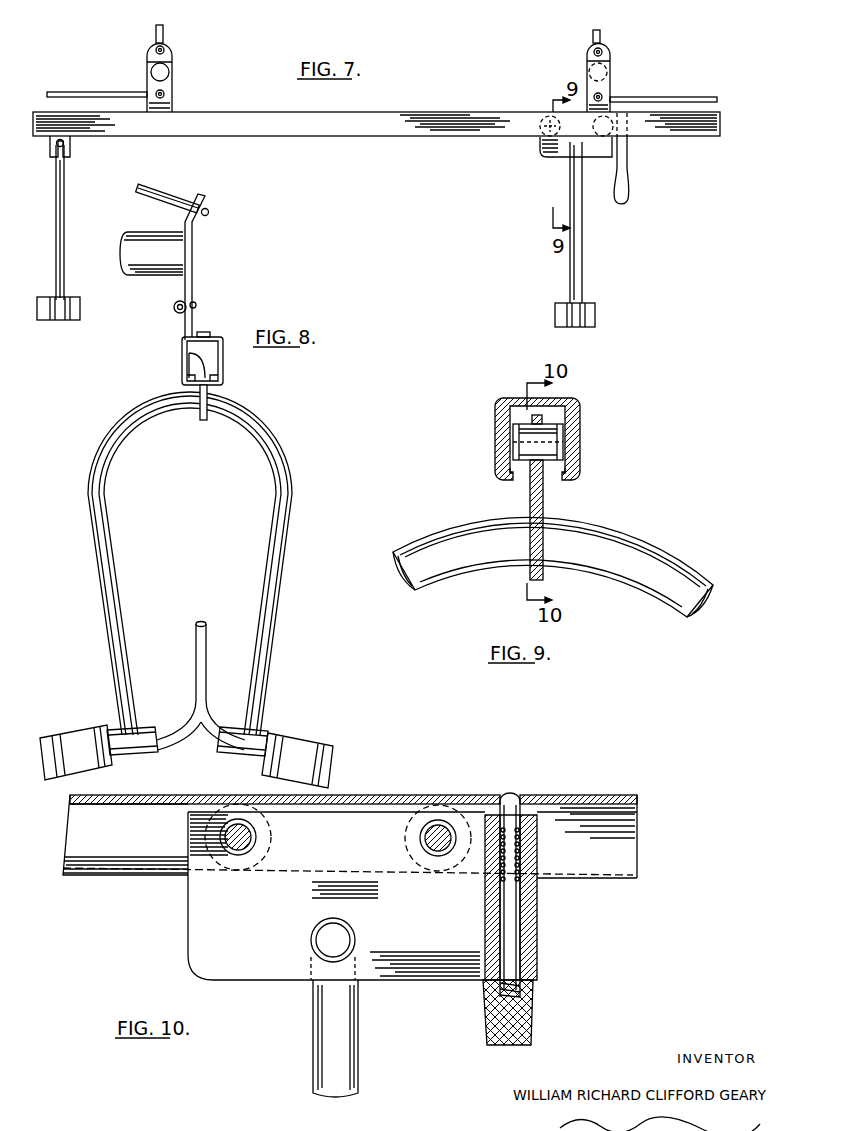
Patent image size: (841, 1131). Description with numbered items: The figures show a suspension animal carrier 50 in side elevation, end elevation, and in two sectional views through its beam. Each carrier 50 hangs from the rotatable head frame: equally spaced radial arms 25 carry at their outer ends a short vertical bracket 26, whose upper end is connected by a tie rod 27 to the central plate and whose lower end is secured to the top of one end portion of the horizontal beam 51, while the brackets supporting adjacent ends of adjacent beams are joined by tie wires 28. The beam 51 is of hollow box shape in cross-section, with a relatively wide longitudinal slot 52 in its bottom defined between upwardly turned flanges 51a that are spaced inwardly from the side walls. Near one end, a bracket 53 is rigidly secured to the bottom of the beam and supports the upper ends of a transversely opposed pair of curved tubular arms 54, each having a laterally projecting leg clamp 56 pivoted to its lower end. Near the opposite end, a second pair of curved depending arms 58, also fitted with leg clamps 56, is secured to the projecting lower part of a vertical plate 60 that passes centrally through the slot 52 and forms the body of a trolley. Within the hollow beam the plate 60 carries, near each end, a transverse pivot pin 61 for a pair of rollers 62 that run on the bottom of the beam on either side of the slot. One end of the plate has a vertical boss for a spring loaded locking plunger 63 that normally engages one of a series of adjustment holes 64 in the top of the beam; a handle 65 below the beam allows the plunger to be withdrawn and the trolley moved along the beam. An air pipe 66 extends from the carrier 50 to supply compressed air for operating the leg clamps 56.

In FIG. 7, the radial arm 25 is at (589, 72).
In FIG. 8, the radial arm 25 is at (164, 270).
In FIG. 7, the vertical bracket 26 is at (173, 87).
In FIG. 8, the vertical bracket 26 is at (193, 282).
In FIG. 7, the tie rod 27 is at (164, 33).
In FIG. 8, the tie rod 27 is at (171, 193).
In FIG. 7, the tie wire 28 is at (95, 92).
In FIG. 8, the tie wire 28 is at (174, 309).
In FIG. 7, the animal carrier 50 is at (468, 65).
In FIG. 7, the horizontal beam 51 is at (368, 128).
In FIG. 8, the horizontal beam 51 is at (224, 362).
In FIG. 9, the horizontal beam 51 is at (578, 405).
In FIG. 10, the horizontal beam 51 is at (567, 800).
In FIG. 9, the upwardly turned flange 51a is at (557, 473).
In FIG. 10, the upwardly turned flange 51a is at (100, 860).
In FIG. 9, the longitudinal slot 52 is at (521, 473).
In FIG. 10, the longitudinal slot 52 is at (160, 878).
In FIG. 7, the bracket 53 is at (72, 141).
In FIG. 8, the bracket 53 is at (183, 358).
In FIG. 7, the curved tubular arm 54 is at (65, 190).
In FIG. 8, the curved tubular arm 54 is at (110, 510).
In FIG. 7, the leg clamp 56 is at (73, 298).
In FIG. 8, the leg clamp 56 is at (75, 738).
In FIG. 7, the curved depending arm 58 is at (582, 250).
In FIG. 9, the curved depending arm 58 is at (637, 540).
In FIG. 10, the curved depending arm 58 is at (358, 1027).
In FIG. 7, the vertical plate 60 is at (543, 158).
In FIG. 9, the vertical plate 60 is at (545, 542).
In FIG. 10, the vertical plate 60 is at (362, 896).
In FIG. 9, the transverse pivot pin 61 is at (560, 441).
In FIG. 10, the transverse pivot pin 61 is at (418, 838).
In FIG. 7, the roller 62 is at (540, 124).
In FIG. 9, the roller 62 is at (582, 418).
In FIG. 10, the roller 62 is at (438, 804).
In FIG. 7, the spring loaded locking plunger 63 is at (620, 113).
In FIG. 10, the spring loaded locking plunger 63 is at (510, 798).
In FIG. 10, the adjustment hole 64 is at (309, 800).
In FIG. 7, the handle 65 is at (629, 196).
In FIG. 10, the handle 65 is at (533, 1010).
In FIG. 8, the air pipe 66 is at (190, 628).